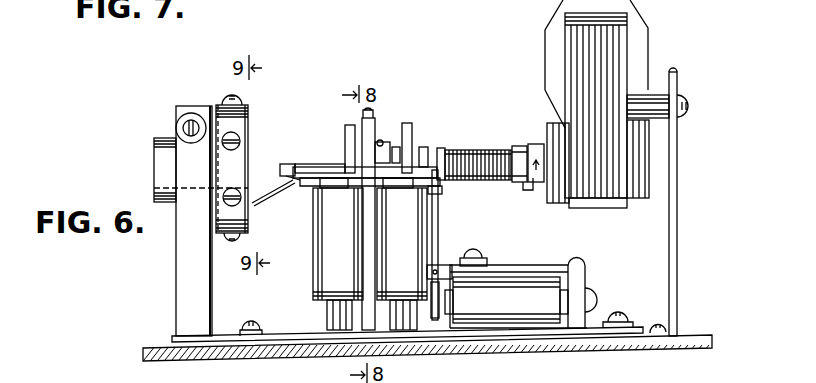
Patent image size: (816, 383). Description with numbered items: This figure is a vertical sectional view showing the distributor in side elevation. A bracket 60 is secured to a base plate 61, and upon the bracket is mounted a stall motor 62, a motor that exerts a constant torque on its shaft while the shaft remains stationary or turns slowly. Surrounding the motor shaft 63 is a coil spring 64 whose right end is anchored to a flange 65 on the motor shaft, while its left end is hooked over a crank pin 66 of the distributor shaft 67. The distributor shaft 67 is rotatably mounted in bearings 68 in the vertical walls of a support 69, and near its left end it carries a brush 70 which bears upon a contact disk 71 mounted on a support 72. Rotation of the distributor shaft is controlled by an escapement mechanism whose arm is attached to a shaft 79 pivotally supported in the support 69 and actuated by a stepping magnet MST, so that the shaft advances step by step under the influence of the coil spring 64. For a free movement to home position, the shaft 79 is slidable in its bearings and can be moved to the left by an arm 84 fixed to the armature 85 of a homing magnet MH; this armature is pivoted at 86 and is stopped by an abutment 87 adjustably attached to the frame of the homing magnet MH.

The bracket 60 is at (350, 136).
The base plate 61 is at (617, 350).
The stall motor 62 is at (544, 47).
The motor shaft 63 is at (535, 145).
The coil spring 64 is at (470, 150).
The flange 65 is at (517, 148).
The crank pin 66 is at (442, 162).
The distributor shaft 67 is at (325, 168).
The bearings 68 is at (424, 150).
The support 69 is at (406, 130).
The brush 70 is at (268, 186).
The contact disk 71 is at (249, 107).
The support 72 is at (182, 250).
The shaft 79 is at (442, 191).
The arm 84 is at (438, 205).
The armature 85 is at (431, 302).
The pivot 86 is at (438, 272).
The abutment 87 is at (470, 258).
The stepping magnet MST is at (316, 280).
The homing magnet MH is at (523, 283).